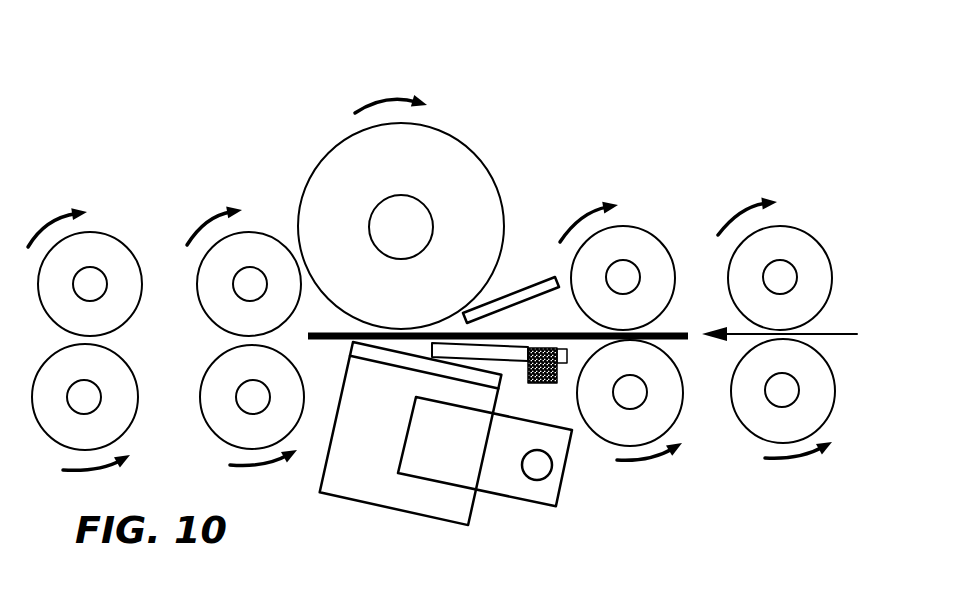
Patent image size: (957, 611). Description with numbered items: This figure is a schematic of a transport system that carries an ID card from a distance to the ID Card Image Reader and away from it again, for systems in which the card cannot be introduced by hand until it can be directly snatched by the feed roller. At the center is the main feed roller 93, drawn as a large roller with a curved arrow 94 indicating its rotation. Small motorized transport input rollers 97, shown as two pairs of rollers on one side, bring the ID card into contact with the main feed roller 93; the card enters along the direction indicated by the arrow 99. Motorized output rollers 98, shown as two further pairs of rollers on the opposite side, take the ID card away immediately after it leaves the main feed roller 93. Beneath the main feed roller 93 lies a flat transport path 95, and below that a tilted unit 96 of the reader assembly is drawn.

The main feed roller 93 is at (467, 153).
The rotation direction of drum 94 is at (388, 97).
The transfer belt 95 is at (678, 339).
The developing unit 96 is at (373, 485).
The motorized transport input rollers 97 is at (643, 215).
The motorized output rollers 98 is at (262, 223).
The sheet feed direction 99 is at (842, 323).